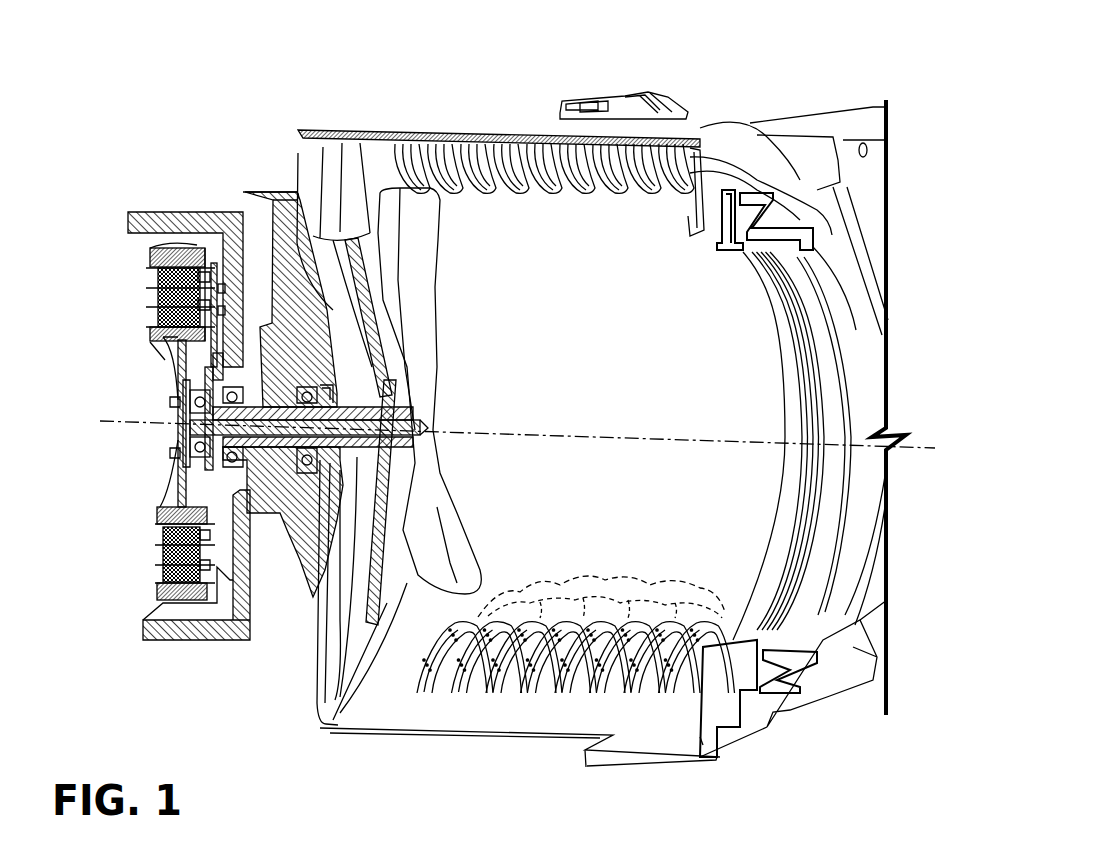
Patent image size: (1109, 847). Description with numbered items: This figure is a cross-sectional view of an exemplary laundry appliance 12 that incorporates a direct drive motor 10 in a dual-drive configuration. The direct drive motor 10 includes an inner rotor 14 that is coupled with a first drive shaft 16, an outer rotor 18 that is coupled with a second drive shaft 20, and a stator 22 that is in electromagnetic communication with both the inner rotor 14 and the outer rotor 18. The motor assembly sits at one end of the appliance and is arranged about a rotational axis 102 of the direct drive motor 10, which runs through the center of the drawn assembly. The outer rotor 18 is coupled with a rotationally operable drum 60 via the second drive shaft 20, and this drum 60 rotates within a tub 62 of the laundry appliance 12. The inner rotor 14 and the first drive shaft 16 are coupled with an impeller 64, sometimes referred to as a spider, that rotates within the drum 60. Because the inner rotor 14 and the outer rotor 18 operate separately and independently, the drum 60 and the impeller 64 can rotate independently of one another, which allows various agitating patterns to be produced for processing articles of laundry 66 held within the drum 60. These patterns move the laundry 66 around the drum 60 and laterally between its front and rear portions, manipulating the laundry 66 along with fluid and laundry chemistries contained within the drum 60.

The direct drive motor 10 is at (123, 307).
The laundry appliance 12 is at (569, 71).
The inner rotor 14 is at (161, 355).
The first drive shaft 16 is at (190, 421).
The outer rotor 18 is at (181, 237).
The second drive shaft 20 is at (258, 355).
The stator 22 is at (139, 562).
The drum 60 is at (477, 708).
The tub 62 is at (689, 101).
The impeller 64 is at (454, 259).
The articles of laundry 66 is at (679, 583).
The rotational axis 102 is at (587, 436).